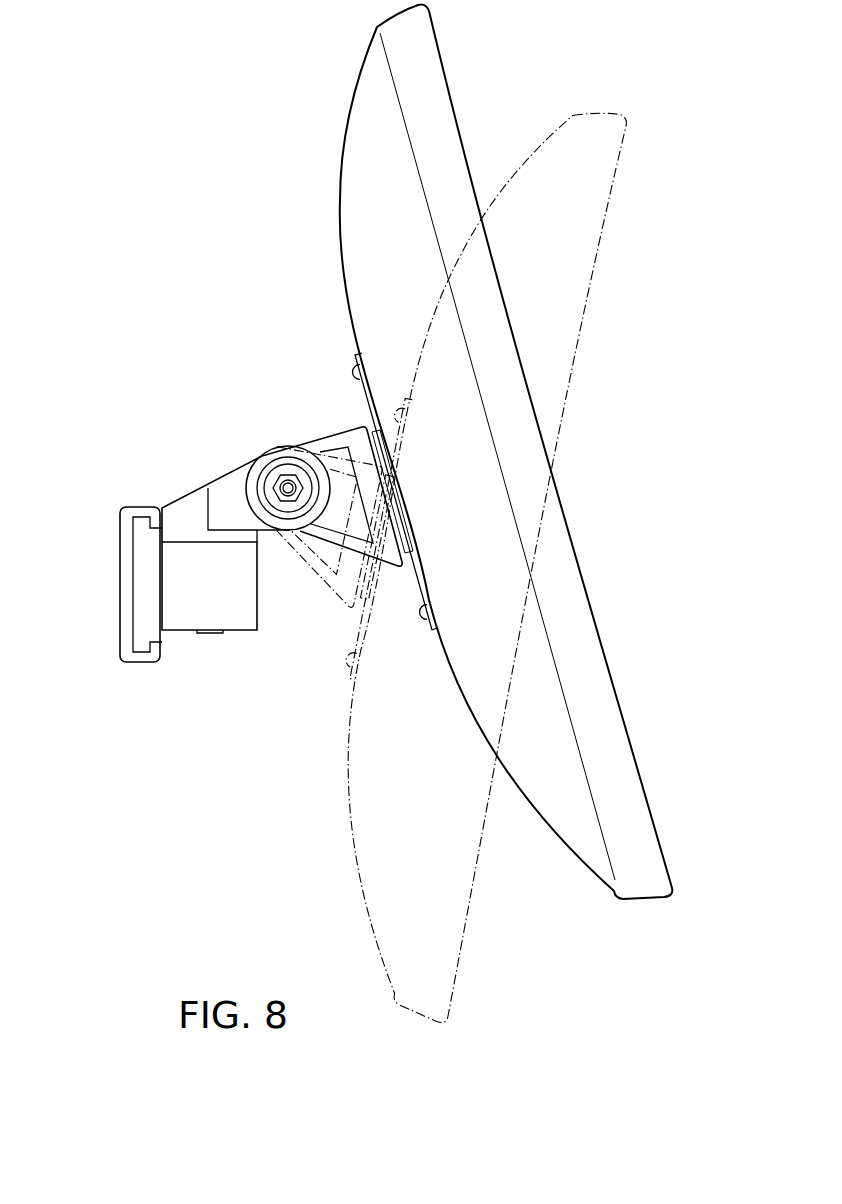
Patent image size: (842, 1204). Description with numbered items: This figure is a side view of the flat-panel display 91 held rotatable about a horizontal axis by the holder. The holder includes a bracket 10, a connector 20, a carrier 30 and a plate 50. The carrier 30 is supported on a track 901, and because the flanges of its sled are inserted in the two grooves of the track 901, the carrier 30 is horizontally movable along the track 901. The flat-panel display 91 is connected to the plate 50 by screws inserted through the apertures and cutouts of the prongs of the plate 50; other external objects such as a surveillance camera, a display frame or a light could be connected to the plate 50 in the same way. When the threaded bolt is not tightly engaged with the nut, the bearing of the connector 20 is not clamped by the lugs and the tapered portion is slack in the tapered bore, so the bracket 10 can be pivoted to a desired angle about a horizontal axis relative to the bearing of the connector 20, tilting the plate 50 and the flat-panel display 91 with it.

The flat-panel display 91 is at (339, 151).
The plate 50 is at (357, 349).
The bracket 10 is at (329, 426).
The connector 20 is at (217, 470).
The carrier 30 is at (178, 640).
The track 901 is at (114, 552).